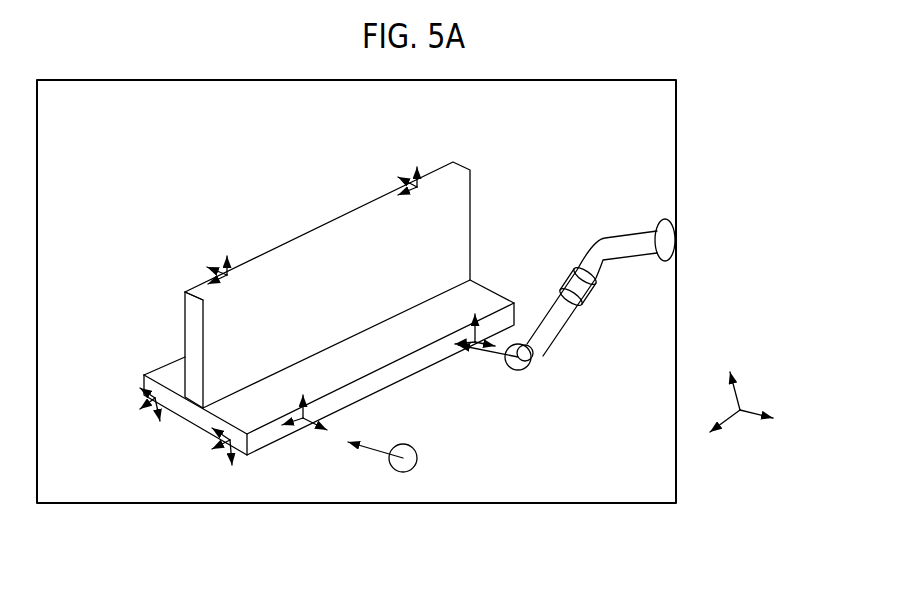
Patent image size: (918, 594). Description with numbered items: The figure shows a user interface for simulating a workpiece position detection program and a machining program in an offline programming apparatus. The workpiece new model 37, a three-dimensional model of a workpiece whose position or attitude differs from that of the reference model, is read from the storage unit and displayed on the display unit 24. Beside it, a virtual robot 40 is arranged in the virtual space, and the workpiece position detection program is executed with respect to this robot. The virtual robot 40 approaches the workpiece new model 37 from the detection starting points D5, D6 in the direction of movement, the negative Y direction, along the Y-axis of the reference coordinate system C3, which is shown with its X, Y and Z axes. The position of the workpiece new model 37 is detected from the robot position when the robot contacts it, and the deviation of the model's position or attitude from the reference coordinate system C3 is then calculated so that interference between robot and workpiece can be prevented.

The display unit 24 is at (677, 110).
The workpiece new model 37 is at (308, 231).
The virtual robot 40 is at (617, 233).
The detection starting point D5 is at (403, 472).
The detection starting point D6 is at (520, 370).
The reference coordinate system C3 is at (750, 409).